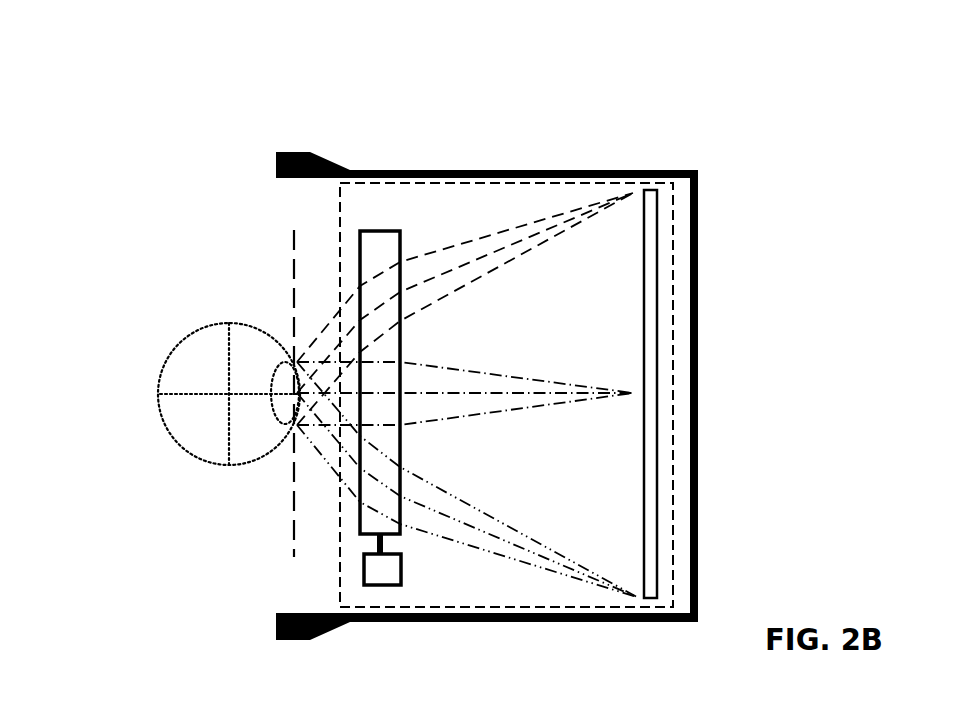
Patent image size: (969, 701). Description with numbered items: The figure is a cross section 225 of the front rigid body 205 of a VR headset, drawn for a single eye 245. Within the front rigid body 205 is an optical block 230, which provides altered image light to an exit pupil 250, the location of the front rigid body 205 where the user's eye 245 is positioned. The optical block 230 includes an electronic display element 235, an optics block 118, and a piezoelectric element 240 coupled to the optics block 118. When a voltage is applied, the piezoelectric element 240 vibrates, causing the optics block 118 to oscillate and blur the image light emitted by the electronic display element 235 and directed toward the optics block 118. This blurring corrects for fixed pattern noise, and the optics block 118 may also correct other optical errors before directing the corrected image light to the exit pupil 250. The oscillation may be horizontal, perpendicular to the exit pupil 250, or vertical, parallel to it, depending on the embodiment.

The cross section 225 is at (47, 50).
The front rigid body 205 is at (667, 168).
The optical block 230 is at (337, 517).
The electronic display element 235 is at (661, 306).
The optics block 118 is at (357, 247).
The piezoelectric element 240 is at (360, 578).
The eye 245 is at (192, 333).
The exit pupil 250 is at (292, 302).